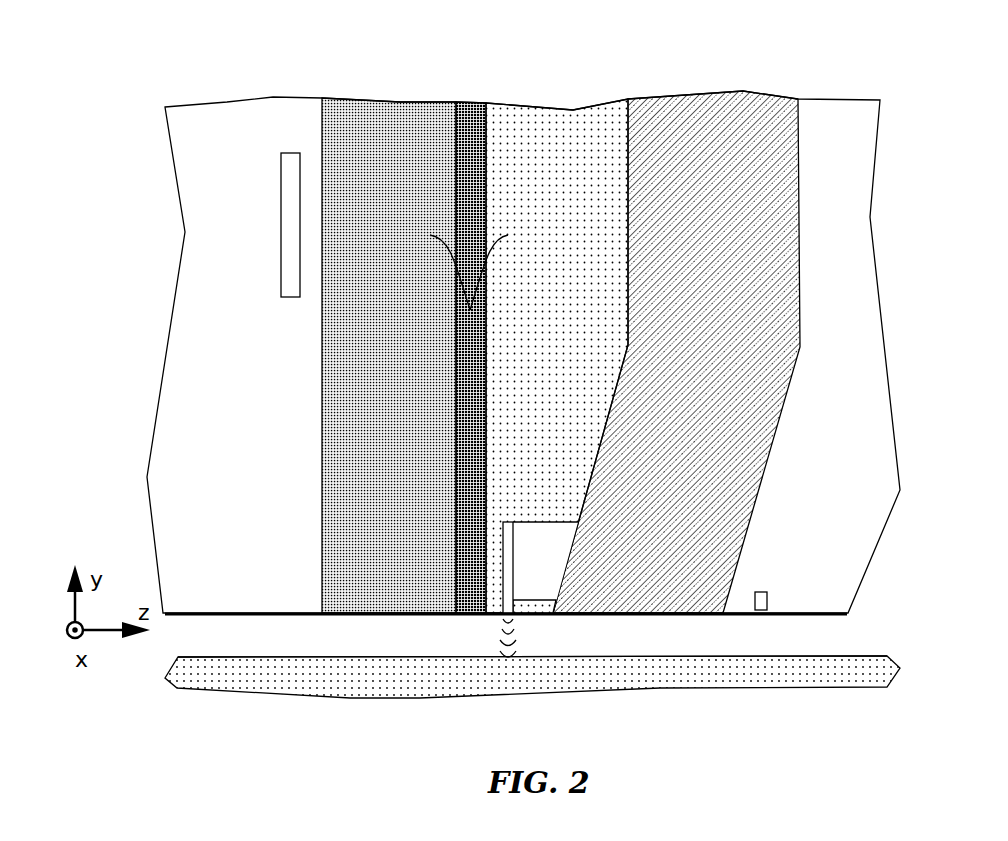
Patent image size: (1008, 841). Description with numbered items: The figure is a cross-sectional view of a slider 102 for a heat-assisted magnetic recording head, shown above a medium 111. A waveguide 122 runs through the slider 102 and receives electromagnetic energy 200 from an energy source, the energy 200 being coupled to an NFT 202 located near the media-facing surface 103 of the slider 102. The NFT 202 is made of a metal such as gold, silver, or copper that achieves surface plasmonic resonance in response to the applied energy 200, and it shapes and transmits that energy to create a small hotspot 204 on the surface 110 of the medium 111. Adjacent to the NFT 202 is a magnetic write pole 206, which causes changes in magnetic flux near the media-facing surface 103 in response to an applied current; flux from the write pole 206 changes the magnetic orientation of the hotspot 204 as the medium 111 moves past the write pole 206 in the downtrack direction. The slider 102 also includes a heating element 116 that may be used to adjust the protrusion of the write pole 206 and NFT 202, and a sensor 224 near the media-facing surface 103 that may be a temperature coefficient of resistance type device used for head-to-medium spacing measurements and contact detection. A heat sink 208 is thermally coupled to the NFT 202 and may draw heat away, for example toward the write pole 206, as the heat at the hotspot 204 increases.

The slider 102 is at (213, 69).
The media-facing surface 103 is at (845, 615).
The surface 110 is at (675, 670).
The medium 111 is at (705, 667).
The heating element 116 is at (281, 252).
The waveguide 122 is at (475, 319).
The electromagnetic energy 200 is at (452, 267).
The NFT 202 is at (507, 620).
The hotspot 204 is at (515, 660).
The magnetic write pole 206 is at (723, 90).
The heat sink 208 is at (532, 593).
The sensor 224 is at (762, 592).